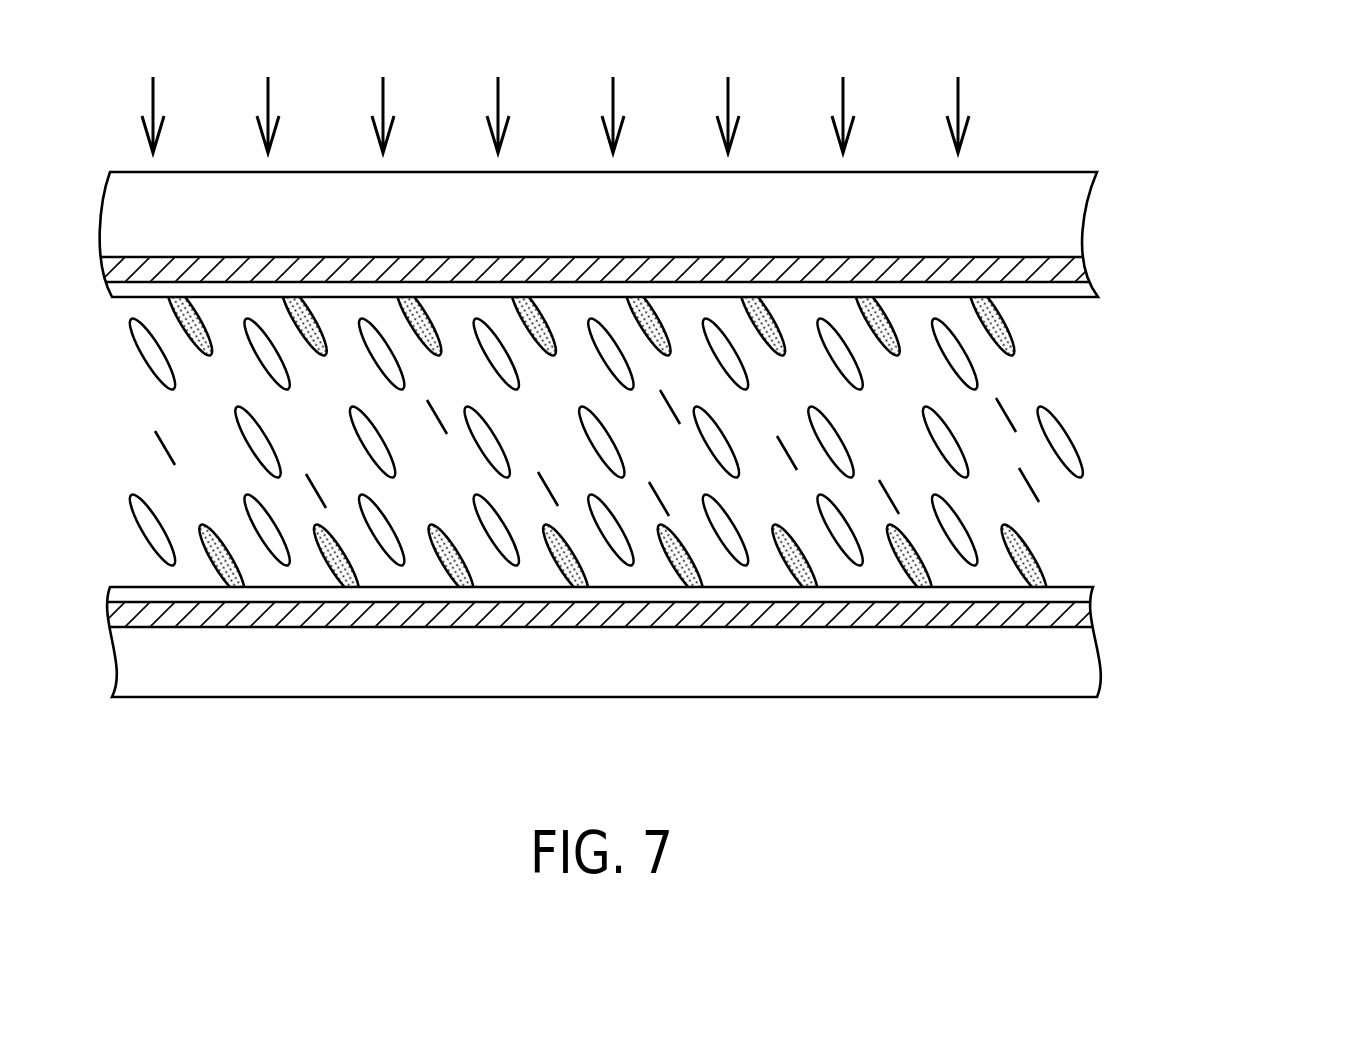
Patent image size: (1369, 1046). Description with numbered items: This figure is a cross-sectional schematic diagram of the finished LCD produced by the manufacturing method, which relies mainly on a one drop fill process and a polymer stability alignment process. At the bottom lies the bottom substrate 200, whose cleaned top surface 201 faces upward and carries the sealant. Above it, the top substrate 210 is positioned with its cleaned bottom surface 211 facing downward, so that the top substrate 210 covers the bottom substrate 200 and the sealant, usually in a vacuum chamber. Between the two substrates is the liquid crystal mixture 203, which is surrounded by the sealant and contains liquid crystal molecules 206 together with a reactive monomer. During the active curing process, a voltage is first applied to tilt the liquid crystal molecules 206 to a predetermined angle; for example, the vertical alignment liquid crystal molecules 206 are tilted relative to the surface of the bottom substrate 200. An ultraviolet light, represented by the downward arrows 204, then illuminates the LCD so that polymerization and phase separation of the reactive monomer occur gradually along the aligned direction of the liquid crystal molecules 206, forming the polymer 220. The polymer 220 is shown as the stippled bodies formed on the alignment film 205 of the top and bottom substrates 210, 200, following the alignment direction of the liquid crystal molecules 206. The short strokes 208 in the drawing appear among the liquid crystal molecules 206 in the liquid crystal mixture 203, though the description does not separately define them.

The bottom substrate 200 is at (637, 673).
The top surface 201 is at (127, 586).
The liquid crystal mixture 203 is at (746, 440).
The incident light (UV irradiation) 204 is at (957, 98).
The alignment film 205 is at (1085, 290).
The liquid crystal molecules 206 is at (1070, 437).
The liquid crystal molecules (edge-on) 208 is at (666, 453).
The top substrate 210 is at (638, 230).
The bottom surface 211 is at (127, 297).
The polymer 220 is at (1005, 322).